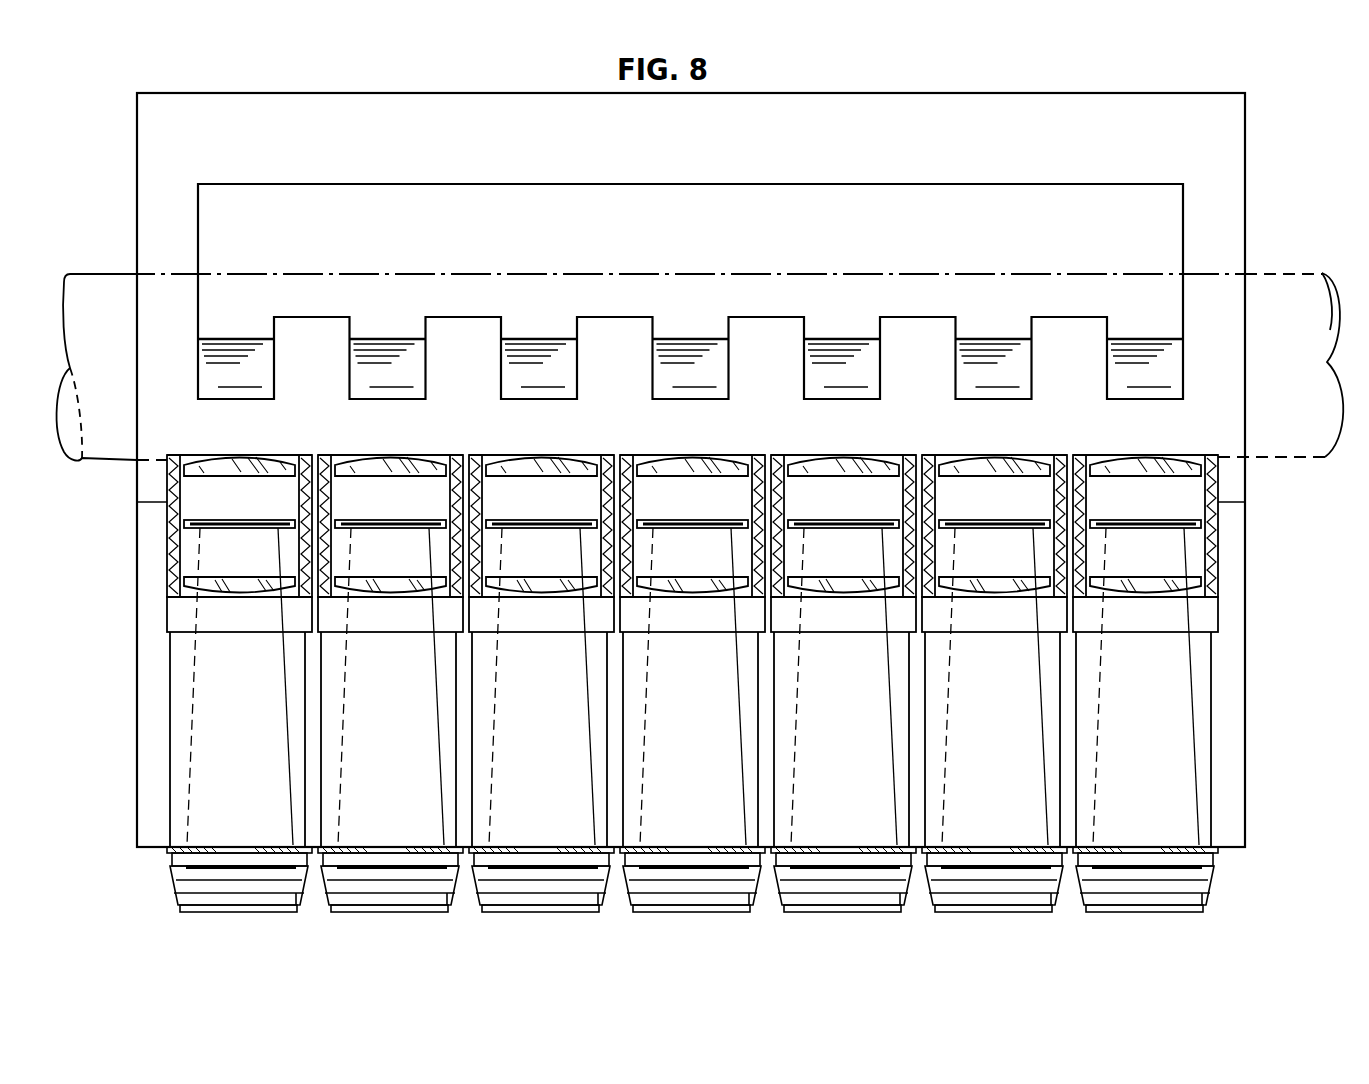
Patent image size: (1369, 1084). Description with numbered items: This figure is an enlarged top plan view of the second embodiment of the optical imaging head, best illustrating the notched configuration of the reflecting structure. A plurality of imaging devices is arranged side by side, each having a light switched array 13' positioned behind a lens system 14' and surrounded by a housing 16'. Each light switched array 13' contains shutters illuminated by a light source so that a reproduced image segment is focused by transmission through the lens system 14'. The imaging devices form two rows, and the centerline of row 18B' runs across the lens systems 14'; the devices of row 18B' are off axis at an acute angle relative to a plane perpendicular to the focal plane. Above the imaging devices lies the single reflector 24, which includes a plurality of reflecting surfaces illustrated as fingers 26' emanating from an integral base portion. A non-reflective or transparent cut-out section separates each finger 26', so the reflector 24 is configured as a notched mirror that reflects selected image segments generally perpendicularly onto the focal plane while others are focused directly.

The reflector 24 is at (1246, 183).
The fingers 26' is at (690, 363).
The lens system 14' is at (694, 534).
The housing 16' is at (692, 526).
The row 18B' is at (662, 525).
The light switched array 13' is at (692, 905).